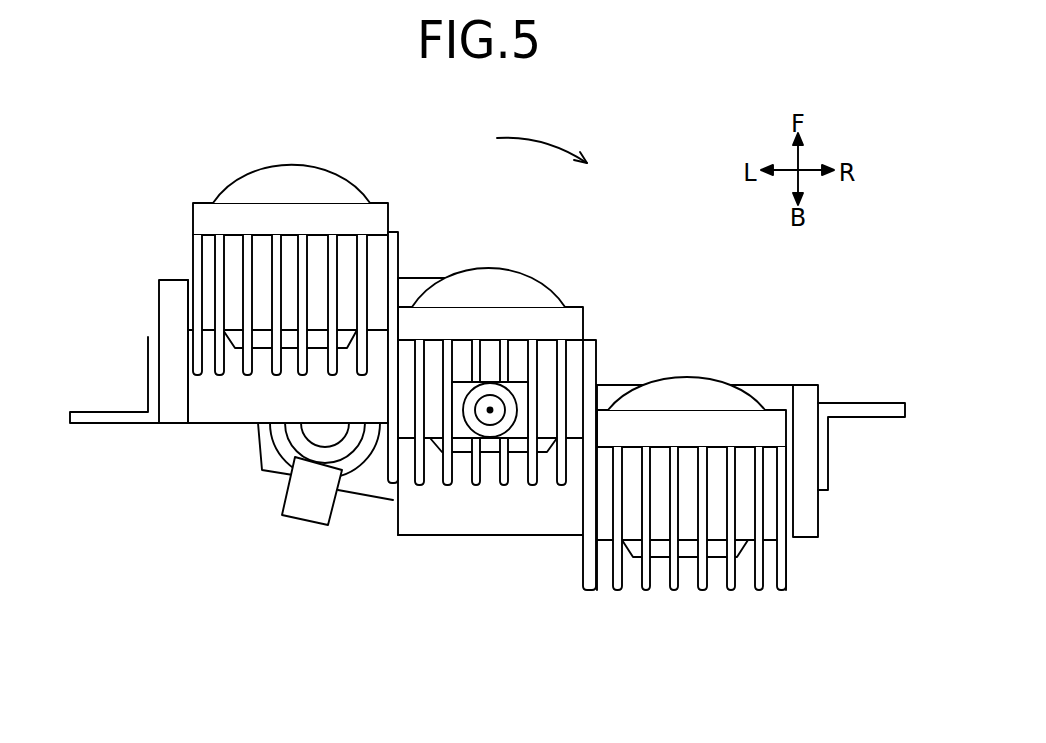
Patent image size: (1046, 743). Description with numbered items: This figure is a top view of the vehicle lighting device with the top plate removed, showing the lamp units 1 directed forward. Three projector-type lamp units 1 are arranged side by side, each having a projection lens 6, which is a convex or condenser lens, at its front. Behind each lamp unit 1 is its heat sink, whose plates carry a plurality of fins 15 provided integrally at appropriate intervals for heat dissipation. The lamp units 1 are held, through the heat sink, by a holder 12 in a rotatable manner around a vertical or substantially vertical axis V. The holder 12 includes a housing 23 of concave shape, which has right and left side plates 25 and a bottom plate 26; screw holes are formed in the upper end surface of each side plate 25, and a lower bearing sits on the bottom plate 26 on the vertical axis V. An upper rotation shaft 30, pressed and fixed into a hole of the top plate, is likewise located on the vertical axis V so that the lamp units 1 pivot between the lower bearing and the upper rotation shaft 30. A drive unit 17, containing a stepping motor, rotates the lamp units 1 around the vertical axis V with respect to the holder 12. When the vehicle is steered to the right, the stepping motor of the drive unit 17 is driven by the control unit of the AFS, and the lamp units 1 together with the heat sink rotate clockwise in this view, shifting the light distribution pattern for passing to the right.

The lamp unit 1 is at (220, 187).
The projection lens 6 is at (320, 190).
The holder 12 is at (487, 372).
The fins 15 is at (333, 277).
The drive unit 17 is at (252, 457).
The housing 23 is at (158, 300).
The side plate 25 is at (172, 415).
The bottom plate 26 is at (217, 410).
The upper rotation shaft 30 is at (503, 413).
The vertical axis V is at (489, 414).